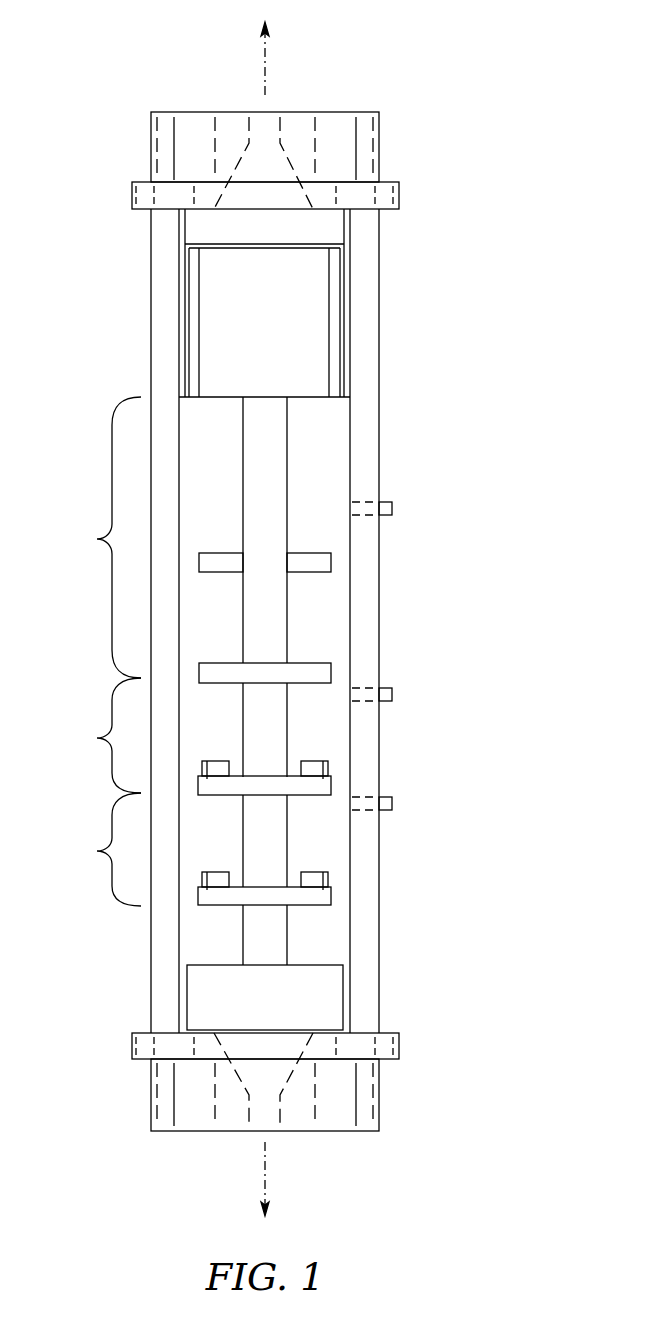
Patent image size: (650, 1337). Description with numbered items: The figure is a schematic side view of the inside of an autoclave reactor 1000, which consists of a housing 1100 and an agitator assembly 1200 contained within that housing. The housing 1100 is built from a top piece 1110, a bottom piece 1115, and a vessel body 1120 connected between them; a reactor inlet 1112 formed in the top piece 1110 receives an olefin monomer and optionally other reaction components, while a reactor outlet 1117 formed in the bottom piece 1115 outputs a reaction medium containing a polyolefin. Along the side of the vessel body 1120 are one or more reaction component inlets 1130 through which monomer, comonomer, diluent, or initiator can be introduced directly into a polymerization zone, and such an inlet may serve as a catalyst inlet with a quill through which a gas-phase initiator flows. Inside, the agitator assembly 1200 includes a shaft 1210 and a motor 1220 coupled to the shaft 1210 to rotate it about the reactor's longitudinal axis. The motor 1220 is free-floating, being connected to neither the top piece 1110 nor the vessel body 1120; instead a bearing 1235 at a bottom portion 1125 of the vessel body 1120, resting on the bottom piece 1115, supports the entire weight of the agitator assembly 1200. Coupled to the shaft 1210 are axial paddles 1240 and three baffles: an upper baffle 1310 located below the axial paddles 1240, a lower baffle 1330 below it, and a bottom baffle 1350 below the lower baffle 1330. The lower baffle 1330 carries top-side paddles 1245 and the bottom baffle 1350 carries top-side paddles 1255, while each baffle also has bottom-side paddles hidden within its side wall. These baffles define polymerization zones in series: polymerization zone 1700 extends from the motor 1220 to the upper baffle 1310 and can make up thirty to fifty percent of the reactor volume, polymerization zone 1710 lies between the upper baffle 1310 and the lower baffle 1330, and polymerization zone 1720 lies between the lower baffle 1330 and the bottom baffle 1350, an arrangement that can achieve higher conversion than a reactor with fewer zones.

The autoclave reactor 1000 is at (152, 50).
The housing 1100 is at (151, 147).
The top piece 1110 is at (362, 145).
The reactor inlet 1112 is at (270, 120).
The bottom piece 1115 is at (362, 1088).
The reactor outlet 1117 is at (263, 1117).
The vessel body 1120 is at (365, 635).
The bottom portion 1125 is at (396, 1016).
The reaction component inlets 1130 is at (392, 508).
The agitator assembly 1200 is at (336, 428).
The shaft 1210 is at (275, 613).
The motor 1220 is at (222, 316).
The bearing 1235 is at (265, 997).
The axial paddles 1240 is at (331, 562).
The top-side paddles 1245 is at (313, 761).
The top-side paddles 1255 is at (313, 872).
The upper baffle 1310 is at (331, 676).
The lower baffle 1330 is at (331, 787).
The bottom baffle 1350 is at (331, 898).
The polymerization zone 1700 is at (92, 537).
The polymerization zone 1710 is at (92, 735).
The polymerization zone 1720 is at (92, 849).